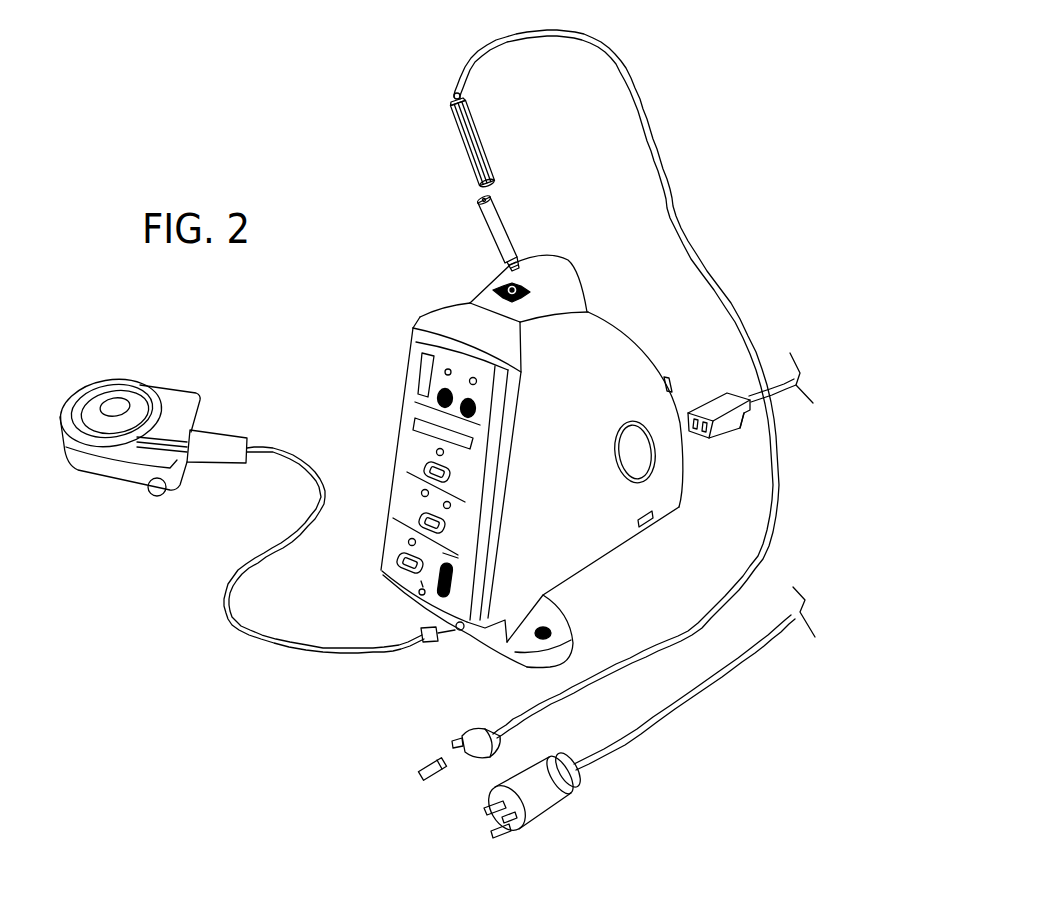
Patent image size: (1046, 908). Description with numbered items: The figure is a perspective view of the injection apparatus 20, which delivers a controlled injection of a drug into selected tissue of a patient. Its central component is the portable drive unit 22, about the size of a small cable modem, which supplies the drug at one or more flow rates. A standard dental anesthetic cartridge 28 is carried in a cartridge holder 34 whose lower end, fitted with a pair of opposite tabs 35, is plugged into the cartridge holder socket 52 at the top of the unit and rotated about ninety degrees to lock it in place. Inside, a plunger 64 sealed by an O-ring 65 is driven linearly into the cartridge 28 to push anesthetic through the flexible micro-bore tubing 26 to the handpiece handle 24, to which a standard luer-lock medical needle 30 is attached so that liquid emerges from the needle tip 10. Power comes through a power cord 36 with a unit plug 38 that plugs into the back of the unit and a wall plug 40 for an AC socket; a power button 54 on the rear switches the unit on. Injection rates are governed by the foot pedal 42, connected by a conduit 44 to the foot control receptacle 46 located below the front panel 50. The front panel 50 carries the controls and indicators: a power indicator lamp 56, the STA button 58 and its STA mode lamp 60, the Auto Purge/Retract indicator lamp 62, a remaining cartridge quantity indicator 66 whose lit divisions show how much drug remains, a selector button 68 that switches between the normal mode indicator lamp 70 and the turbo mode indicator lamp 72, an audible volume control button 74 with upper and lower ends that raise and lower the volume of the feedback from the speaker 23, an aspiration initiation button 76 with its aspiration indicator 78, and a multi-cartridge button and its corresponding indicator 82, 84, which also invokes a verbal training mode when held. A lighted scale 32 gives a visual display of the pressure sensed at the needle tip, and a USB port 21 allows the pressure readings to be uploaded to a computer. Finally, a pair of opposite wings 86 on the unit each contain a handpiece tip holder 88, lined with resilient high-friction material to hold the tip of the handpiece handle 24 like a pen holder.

The needle tip 10 is at (421, 773).
The apparatus 20 is at (676, 187).
The USB port 21 is at (648, 533).
The drive unit 22 is at (603, 398).
The speaker 23 is at (648, 478).
The handpiece handle 24 is at (533, 713).
The micro-bore tubing 26 is at (730, 300).
The dental anesthetic cartridge 28 is at (483, 217).
The medical needle 30 is at (420, 764).
The lighted scale 32 is at (472, 442).
The anesthetic cartridge holder 34 is at (460, 130).
The tabs 35 is at (472, 185).
The power cord 36 is at (627, 743).
The unit plug 38 is at (729, 438).
The wall plug 40 is at (533, 817).
The foot pedal 42 is at (122, 478).
The conduit 44 is at (240, 627).
The foot control receptacle 46 is at (460, 633).
The front panel 50 is at (400, 405).
The cartridge holder socket 52 is at (522, 320).
The power button 54 is at (671, 384).
The power indicator lamp 56 is at (418, 595).
The STA button 58 is at (452, 480).
The STA mode lamp 60 is at (437, 450).
The Auto Purge/Retract indicator lamp 62 is at (445, 392).
The plunger 64 is at (505, 288).
The O-ring 65 is at (518, 284).
The remaining cartridge quantity indicator 66 is at (418, 375).
The selector button 68 is at (418, 522).
The normal mode indicator lamp 70 is at (421, 492).
The turbo mode indicator lamp 72 is at (452, 505).
The audible volume control button 74 is at (452, 573).
The aspiration initiation button 76 is at (400, 567).
The aspiration indicator 78 is at (408, 543).
The knob 82 is at (477, 405).
The multi-cartridge button 84 is at (478, 378).
The wings 86 is at (528, 652).
The handpiece tip holder 88 is at (555, 632).